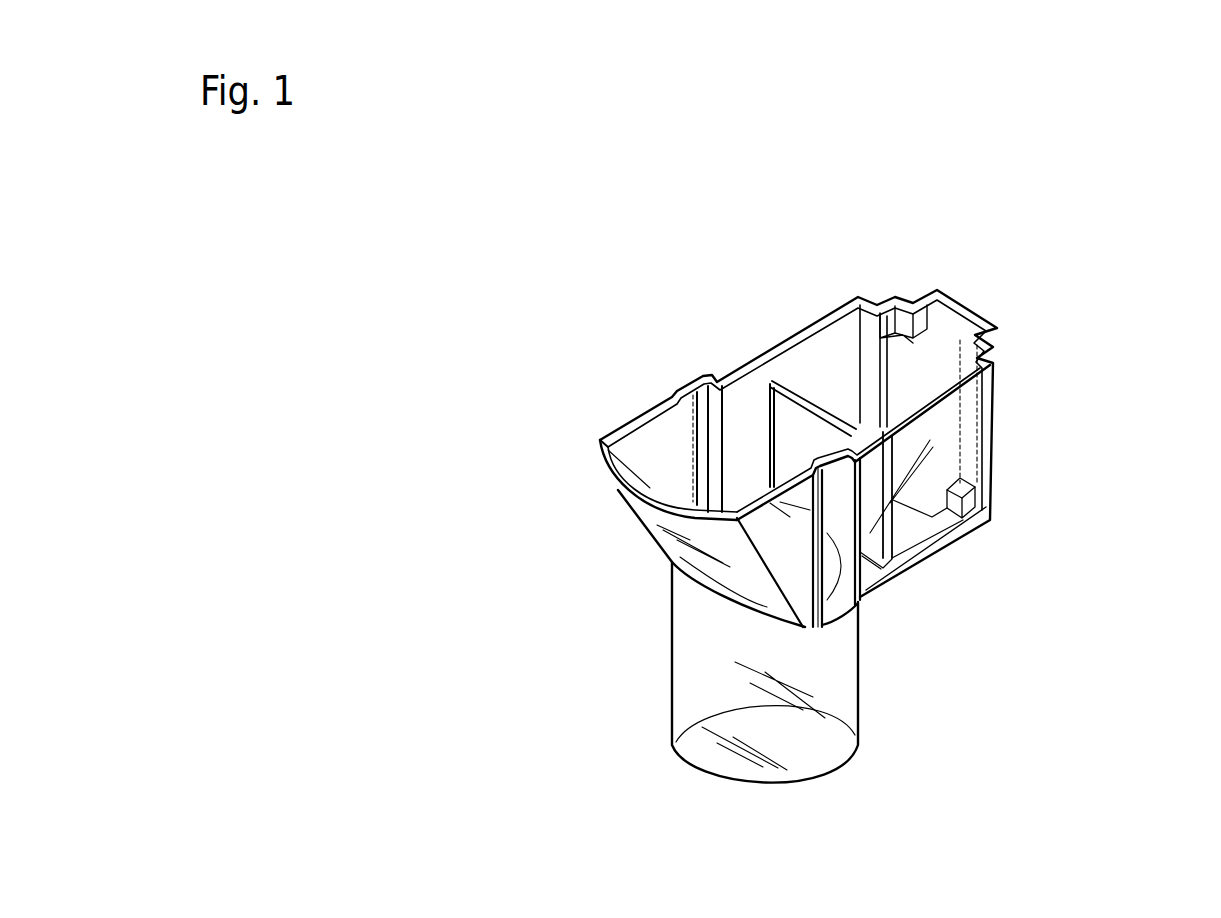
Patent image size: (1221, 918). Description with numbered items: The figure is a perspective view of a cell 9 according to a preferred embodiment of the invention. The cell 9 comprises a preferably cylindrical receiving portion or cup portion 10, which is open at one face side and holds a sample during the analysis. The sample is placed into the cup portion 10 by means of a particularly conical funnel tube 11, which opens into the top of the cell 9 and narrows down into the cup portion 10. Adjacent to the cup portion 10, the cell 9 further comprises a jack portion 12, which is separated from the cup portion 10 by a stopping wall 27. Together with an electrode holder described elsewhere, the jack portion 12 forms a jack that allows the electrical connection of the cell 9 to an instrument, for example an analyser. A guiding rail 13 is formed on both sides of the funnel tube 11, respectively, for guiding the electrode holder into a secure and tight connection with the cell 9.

The cell 9 is at (514, 473).
The cup portion 10 is at (822, 726).
The funnel tube 11 is at (667, 482).
The jack portion 12 is at (912, 380).
The guiding rail 13 is at (700, 392).
The stopping wall 27 is at (800, 432).